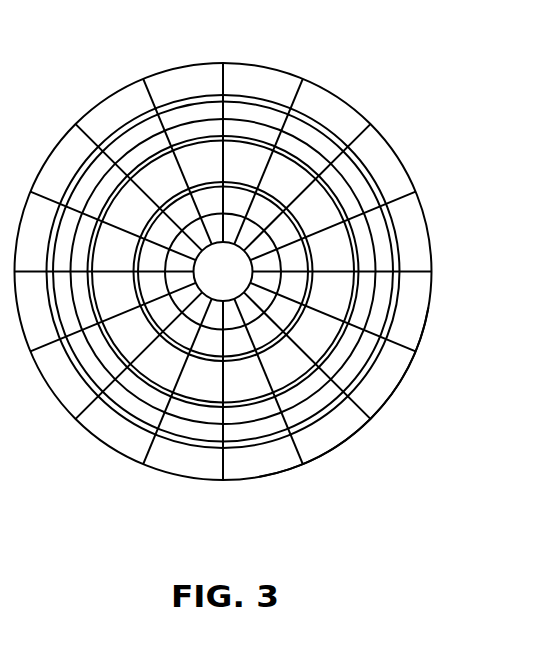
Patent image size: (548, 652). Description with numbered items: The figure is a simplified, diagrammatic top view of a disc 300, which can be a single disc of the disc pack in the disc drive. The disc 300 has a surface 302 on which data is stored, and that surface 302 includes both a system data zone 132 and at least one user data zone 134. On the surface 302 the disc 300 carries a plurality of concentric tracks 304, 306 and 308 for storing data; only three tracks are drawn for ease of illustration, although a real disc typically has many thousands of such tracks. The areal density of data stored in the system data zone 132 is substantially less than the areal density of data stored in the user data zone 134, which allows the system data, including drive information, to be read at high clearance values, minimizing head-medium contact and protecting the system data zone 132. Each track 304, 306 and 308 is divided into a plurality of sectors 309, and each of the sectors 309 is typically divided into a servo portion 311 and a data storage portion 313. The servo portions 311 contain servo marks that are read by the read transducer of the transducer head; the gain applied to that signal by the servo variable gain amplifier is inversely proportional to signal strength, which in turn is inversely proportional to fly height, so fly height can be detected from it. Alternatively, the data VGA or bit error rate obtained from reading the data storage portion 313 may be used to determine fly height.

The disc 300 is at (410, 56).
The system data zone 132 is at (425, 296).
The user data zone 134 is at (180, 242).
The surface 302 is at (273, 108).
The concentric track 304 is at (216, 362).
The concentric track 306 is at (187, 407).
The concentric track 308 is at (108, 415).
The sectors 309 is at (308, 476).
The servo portion 311 is at (337, 404).
The data storage portion 313 is at (313, 424).